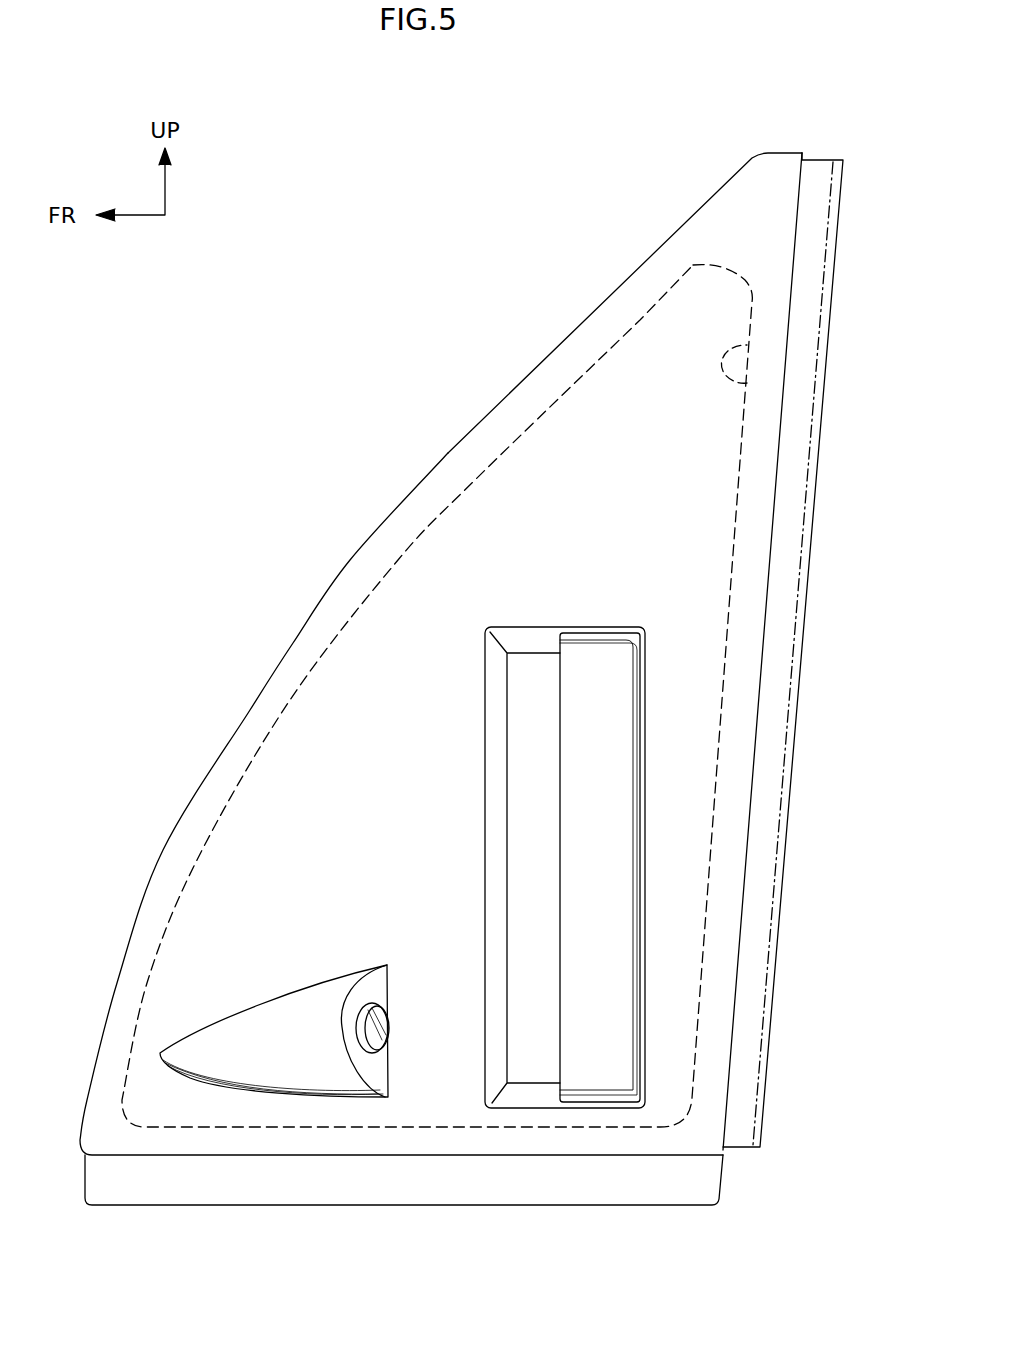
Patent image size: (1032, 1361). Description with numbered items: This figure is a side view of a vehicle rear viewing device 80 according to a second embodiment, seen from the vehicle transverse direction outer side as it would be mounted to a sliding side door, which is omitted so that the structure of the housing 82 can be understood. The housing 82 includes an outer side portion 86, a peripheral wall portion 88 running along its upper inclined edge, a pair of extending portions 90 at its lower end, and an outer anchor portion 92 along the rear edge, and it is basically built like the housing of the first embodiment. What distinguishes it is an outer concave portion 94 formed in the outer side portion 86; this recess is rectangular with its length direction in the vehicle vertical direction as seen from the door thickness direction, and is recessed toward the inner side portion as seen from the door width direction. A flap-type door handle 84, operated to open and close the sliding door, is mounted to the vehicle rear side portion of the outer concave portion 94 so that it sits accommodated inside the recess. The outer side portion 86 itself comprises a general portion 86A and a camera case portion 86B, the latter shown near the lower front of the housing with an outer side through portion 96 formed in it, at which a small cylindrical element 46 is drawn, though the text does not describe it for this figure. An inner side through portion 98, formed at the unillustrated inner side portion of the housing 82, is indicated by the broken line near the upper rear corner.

The vehicle rear viewing device 80 is at (527, 182).
The housing 82 is at (787, 132).
The door handle 84 is at (600, 655).
The outer side portion 86 is at (738, 233).
The general portion 86A is at (477, 515).
The camera case portion 86B is at (235, 1037).
The peripheral wall portion 88 is at (690, 220).
The extending portions 90 is at (577, 1190).
The outer anchor portion 92 is at (783, 555).
The outer concave portion 94 is at (535, 640).
The outer side through portion 96 is at (350, 1047).
The inner side through portion 98 is at (747, 383).
The cylindrical boss 46 is at (390, 1020).